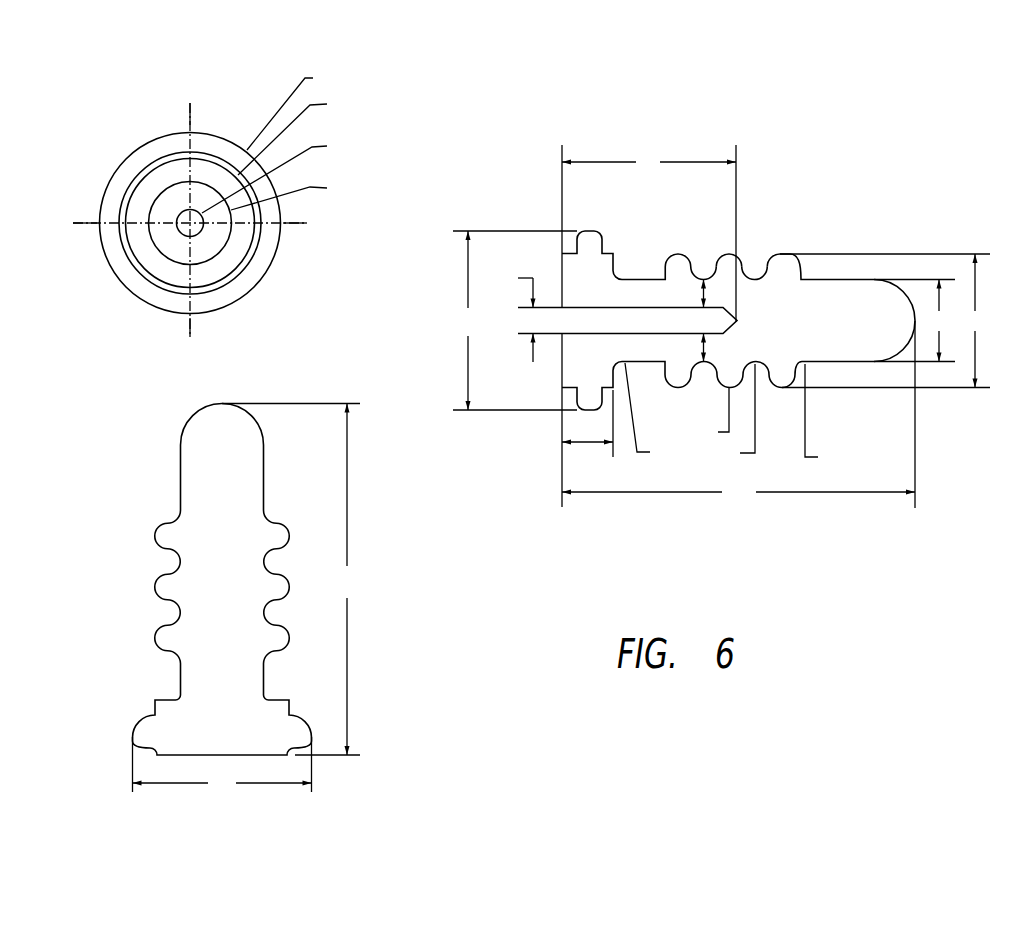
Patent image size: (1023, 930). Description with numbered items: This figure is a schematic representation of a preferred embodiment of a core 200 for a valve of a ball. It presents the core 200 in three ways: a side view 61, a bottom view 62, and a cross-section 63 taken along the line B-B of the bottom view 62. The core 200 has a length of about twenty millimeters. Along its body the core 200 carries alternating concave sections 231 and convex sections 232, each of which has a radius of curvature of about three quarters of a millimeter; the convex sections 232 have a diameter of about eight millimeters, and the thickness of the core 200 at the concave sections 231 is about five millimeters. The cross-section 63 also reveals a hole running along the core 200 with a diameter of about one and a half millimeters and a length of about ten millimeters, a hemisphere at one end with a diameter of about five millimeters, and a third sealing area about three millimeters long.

The side view 61 is at (150, 428).
The bottom view 62 is at (108, 118).
The cross-section 63 is at (721, 326).
The core 200 is at (518, 425).
The concave sections 231 is at (754, 277).
The convex sections 232 is at (730, 253).